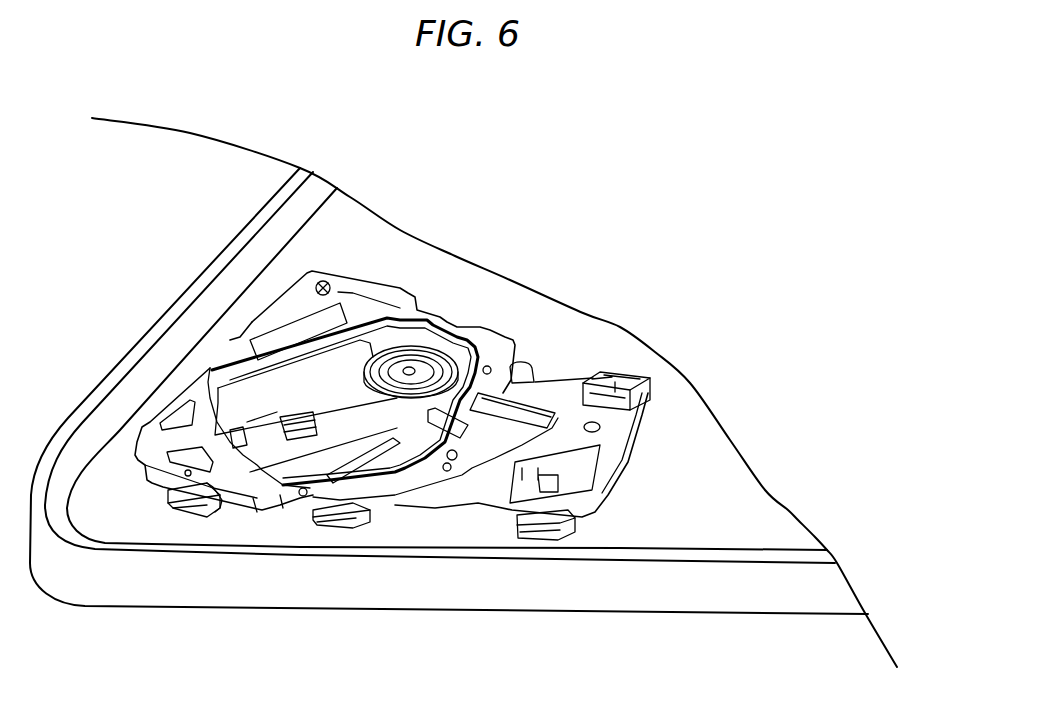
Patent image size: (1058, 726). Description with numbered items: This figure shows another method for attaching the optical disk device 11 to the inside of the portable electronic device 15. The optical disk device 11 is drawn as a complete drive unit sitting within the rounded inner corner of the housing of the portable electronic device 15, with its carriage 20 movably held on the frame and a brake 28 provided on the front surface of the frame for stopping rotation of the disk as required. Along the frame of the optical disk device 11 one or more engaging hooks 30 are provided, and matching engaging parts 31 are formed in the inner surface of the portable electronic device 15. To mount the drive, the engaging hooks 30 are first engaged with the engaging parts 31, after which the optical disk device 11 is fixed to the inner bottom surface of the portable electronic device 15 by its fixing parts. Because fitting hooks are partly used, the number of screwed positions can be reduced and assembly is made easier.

The optical disk device 11 is at (497, 315).
The portable electronic device 15 is at (315, 245).
The carriage 20 is at (570, 393).
The brake 28 is at (334, 272).
The engaging hooks 30 is at (193, 513).
The engaging parts 31 is at (223, 513).